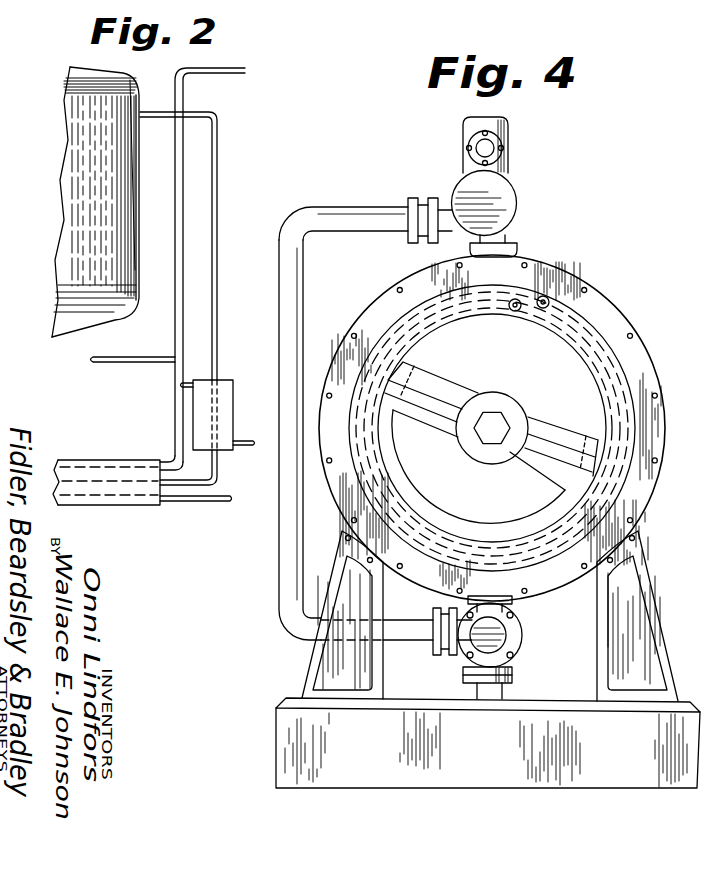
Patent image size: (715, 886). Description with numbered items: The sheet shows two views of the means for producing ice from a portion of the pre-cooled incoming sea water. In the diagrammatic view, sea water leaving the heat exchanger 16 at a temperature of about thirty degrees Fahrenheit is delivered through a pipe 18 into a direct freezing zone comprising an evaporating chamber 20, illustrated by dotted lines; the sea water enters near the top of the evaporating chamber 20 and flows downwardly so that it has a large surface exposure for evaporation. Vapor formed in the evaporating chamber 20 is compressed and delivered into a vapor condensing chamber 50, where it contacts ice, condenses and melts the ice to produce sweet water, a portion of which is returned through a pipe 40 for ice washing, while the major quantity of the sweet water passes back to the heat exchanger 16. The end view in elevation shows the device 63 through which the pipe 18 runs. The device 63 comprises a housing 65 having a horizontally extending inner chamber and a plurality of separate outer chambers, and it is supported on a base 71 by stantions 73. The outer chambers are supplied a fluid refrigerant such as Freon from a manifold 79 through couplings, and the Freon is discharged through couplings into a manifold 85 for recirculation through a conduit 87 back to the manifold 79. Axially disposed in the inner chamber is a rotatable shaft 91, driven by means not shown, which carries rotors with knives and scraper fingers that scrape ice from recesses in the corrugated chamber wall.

In FIG. 2, the heat exchanger 16 is at (133, 460).
In FIG. 2, the pipe 18 is at (212, 485).
In FIG. 2, the evaporating chamber 20 is at (90, 197).
In FIG. 2, the pipe 40 is at (173, 278).
In FIG. 2, the vapor condensing chamber 50 is at (140, 248).
In FIG. 2, the device 63 is at (225, 407).
In FIG. 4, the device 63 is at (609, 284).
In FIG. 4, the housing 65 is at (642, 343).
In FIG. 4, the base 71 is at (315, 738).
In FIG. 4, the stantions 73 is at (380, 603).
In FIG. 4, the manifold 79 is at (508, 168).
In FIG. 4, the manifold 85 is at (500, 637).
In FIG. 4, the conduit 87 is at (287, 560).
In FIG. 4, the rotatable shaft 91 is at (510, 410).